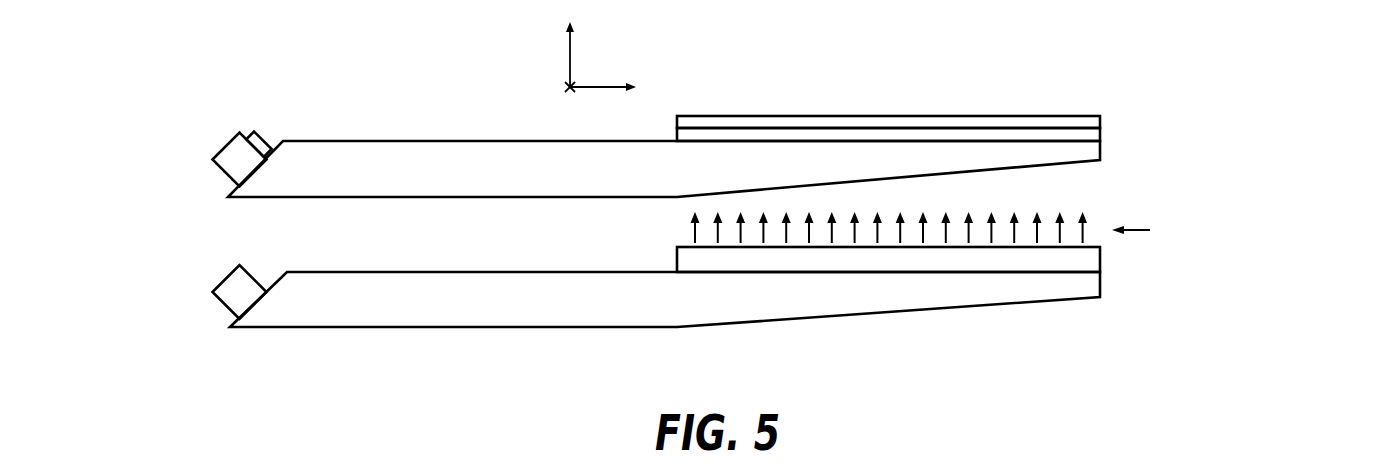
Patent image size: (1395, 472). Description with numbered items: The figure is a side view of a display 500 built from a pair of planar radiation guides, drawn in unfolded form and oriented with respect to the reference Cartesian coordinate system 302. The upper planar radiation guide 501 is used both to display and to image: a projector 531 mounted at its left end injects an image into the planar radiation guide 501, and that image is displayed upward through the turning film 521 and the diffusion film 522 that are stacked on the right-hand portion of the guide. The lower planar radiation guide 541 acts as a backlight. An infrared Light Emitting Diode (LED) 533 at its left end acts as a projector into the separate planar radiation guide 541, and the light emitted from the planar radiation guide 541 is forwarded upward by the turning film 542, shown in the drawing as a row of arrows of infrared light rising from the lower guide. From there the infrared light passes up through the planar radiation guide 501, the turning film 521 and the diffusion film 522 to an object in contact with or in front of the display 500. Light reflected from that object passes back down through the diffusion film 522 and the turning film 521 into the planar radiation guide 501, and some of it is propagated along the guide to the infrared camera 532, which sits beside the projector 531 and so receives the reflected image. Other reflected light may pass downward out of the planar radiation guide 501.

The display 500 is at (471, 65).
The planar radiation guide 501 is at (473, 184).
The turning film 521 is at (1100, 132).
The diffusion film 522 is at (1100, 122).
The projector 531 is at (212, 158).
The infrared camera 532 is at (269, 134).
The infrared Light Emitting Diode (LED) 533 is at (212, 290).
The planar radiation guide 541 is at (473, 317).
The turning film 542 is at (1100, 256).
The reference Cartesian coordinate system 302 is at (602, 84).